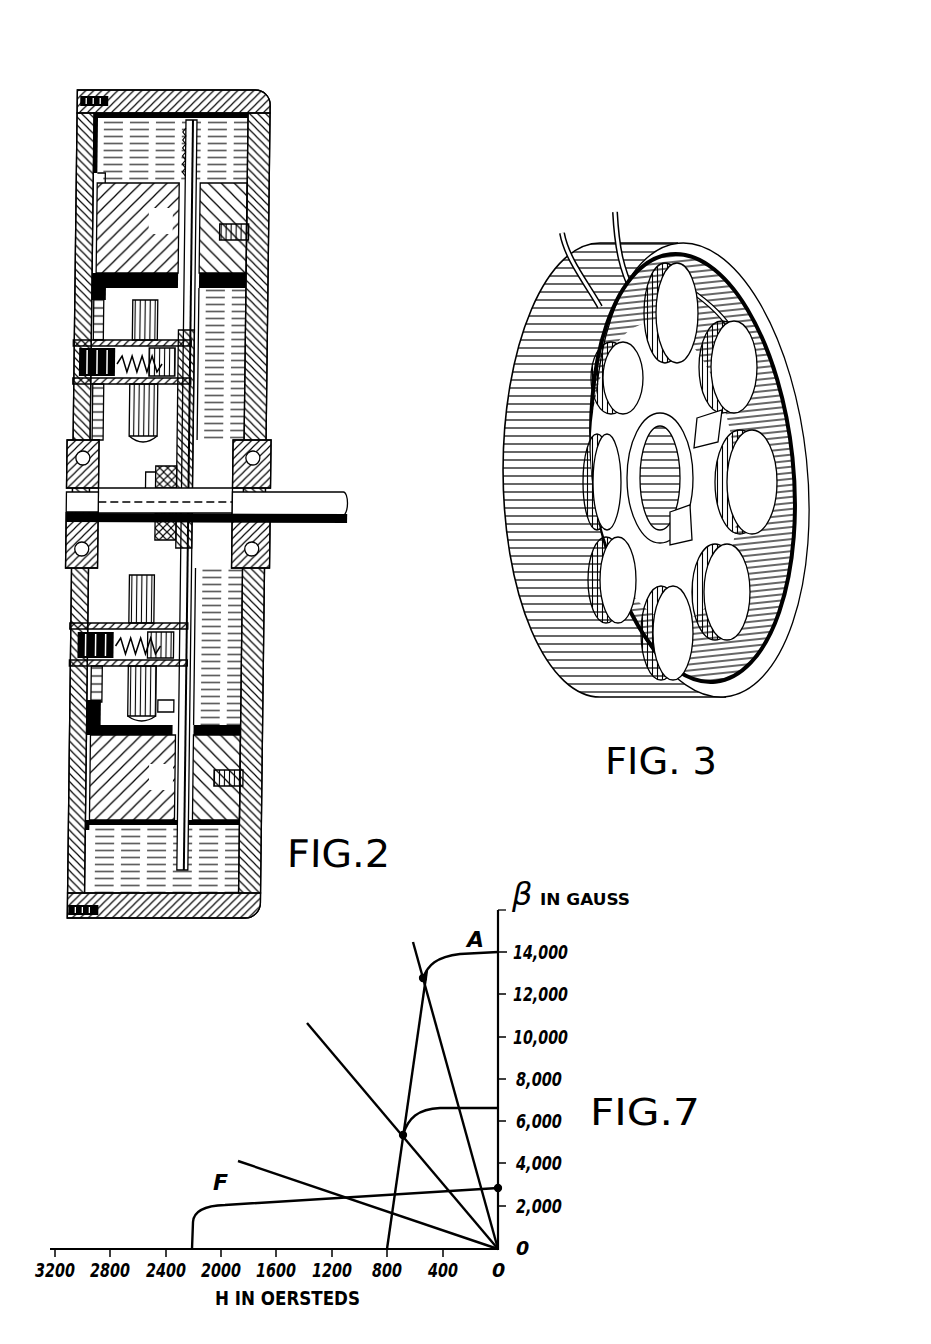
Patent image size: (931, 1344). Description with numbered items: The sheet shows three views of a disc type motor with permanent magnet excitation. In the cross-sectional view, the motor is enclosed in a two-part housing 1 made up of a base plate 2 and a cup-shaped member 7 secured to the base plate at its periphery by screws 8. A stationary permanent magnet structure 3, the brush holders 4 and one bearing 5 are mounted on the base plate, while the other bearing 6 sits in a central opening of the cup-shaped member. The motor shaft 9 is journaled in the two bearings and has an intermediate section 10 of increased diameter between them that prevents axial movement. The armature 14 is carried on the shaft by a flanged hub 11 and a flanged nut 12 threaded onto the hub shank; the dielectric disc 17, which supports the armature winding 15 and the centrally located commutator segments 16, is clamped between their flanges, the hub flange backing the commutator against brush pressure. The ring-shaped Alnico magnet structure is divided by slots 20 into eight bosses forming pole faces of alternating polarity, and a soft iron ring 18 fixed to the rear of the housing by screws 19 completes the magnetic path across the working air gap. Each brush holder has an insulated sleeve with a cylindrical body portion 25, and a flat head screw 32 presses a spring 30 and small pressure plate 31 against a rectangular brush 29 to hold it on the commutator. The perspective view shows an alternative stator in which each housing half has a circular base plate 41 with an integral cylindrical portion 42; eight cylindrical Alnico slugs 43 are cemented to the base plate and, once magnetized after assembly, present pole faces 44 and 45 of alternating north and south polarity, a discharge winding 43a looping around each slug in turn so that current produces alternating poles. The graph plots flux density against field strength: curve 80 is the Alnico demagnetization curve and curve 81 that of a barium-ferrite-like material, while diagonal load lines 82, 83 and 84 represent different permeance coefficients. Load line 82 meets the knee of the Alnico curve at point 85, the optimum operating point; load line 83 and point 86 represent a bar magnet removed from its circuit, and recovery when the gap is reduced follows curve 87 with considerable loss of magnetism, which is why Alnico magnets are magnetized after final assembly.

In FIG. 2, the two-part housing 1 is at (158, 86).
In FIG. 2, the base plate 2 is at (78, 146).
In FIG. 2, the stationary permanent magnet structure 3 is at (120, 193).
In FIG. 2, the brush holders 4 is at (112, 395).
In FIG. 2, the bearing 5 is at (72, 539).
In FIG. 2, the bearing 6 is at (266, 478).
In FIG. 2, the cup-shaped member 7 is at (262, 331).
In FIG. 2, the screws 8 is at (82, 98).
In FIG. 2, the motor shaft 9 is at (322, 494).
In FIG. 2, the intermediate section 10 is at (124, 488).
In FIG. 2, the flanged hub 11 is at (198, 411).
In FIG. 2, the flanged nut 12 is at (158, 546).
In FIG. 2, the motor armature 14 is at (200, 165).
In FIG. 2, the armature winding 15 is at (184, 150).
In FIG. 2, the commutator segments 16 is at (150, 406).
In FIG. 2, the dielectric disc 17 is at (205, 118).
In FIG. 2, the ring of soft iron 18 is at (246, 210).
In FIG. 2, the screws 19 is at (258, 225).
In FIG. 2, the slots 20 is at (172, 713).
In FIG. 2, the cylindrical body portion 25 is at (130, 345).
In FIG. 2, the brushes 29 is at (174, 366).
In FIG. 2, the spring 30 is at (170, 378).
In FIG. 2, the pressure plate 31 is at (82, 372).
In FIG. 2, the flat head screw 32 is at (77, 357).
In FIG. 3, the circular base plate 41 is at (505, 547).
In FIG. 3, the cylindrical portion 42 is at (527, 364).
In FIG. 3, the cylindrical slugs 43 is at (712, 432).
In FIG. 3, the discharge winding 43a is at (723, 313).
In FIG. 3, the pole faces 44 is at (630, 347).
In FIG. 3, the pole faces 45 is at (680, 283).
In FIG. 7, the demagnetization curve 80 is at (403, 1023).
In FIG. 7, the demagnetization curve 81 is at (190, 1214).
In FIG. 7, the load line 82 is at (472, 1040).
In FIG. 7, the load line 83 is at (347, 1077).
In FIG. 7, the load line 84 is at (282, 1173).
In FIG. 7, the point 85 is at (420, 979).
In FIG. 7, the point 86 is at (398, 1135).
In FIG. 7, the recovery curve 87 is at (483, 1086).